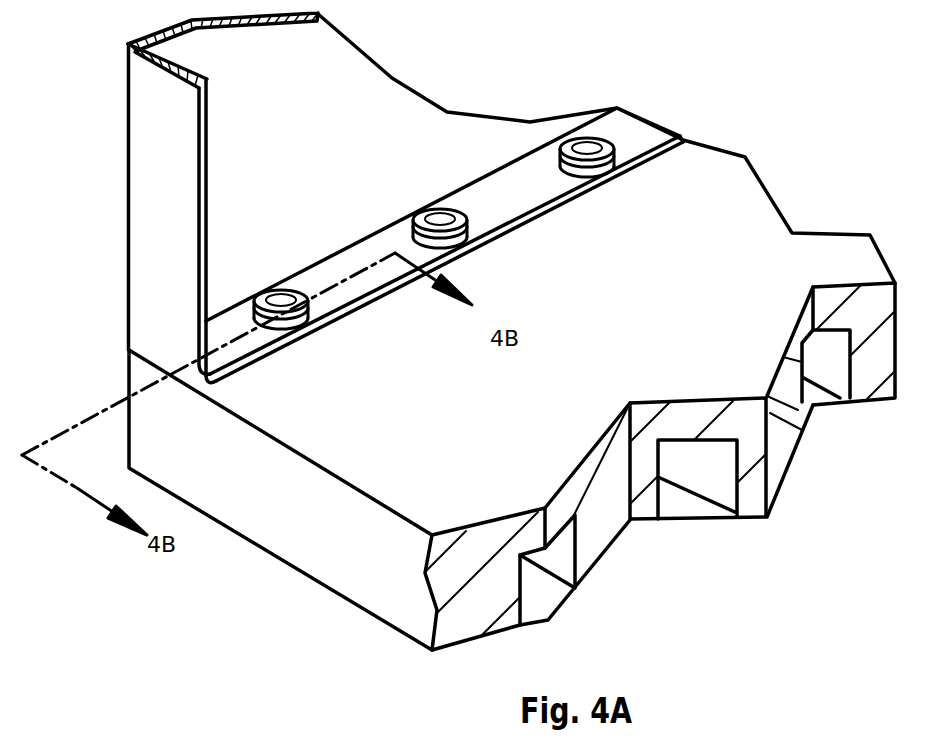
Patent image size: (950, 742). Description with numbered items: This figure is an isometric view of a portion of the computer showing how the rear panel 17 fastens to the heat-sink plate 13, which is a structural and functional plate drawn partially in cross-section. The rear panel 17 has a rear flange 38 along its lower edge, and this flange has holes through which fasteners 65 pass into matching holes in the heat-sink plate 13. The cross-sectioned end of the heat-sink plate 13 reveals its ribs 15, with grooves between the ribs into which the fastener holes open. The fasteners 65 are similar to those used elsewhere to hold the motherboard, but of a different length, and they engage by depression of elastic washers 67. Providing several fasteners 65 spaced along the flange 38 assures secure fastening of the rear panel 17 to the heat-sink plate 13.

The heat-sink plate 13 is at (248, 507).
The ribs 15 is at (593, 552).
The rear panel 17 is at (114, 237).
The rear flange 38 is at (505, 197).
The fasteners 65 is at (276, 297).
The elastic washers 67 is at (263, 327).